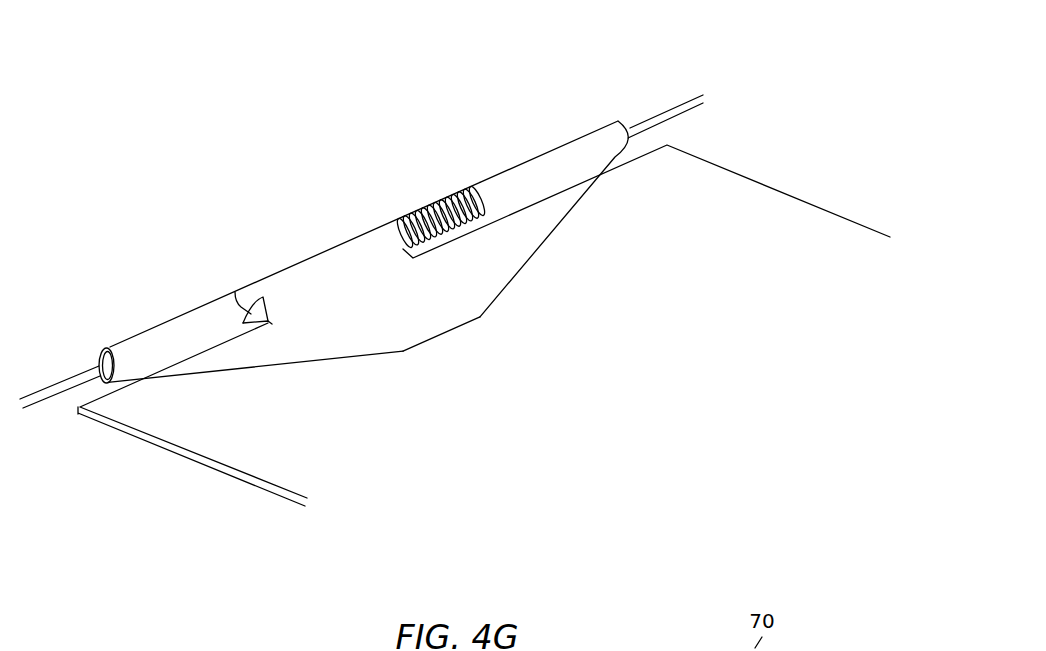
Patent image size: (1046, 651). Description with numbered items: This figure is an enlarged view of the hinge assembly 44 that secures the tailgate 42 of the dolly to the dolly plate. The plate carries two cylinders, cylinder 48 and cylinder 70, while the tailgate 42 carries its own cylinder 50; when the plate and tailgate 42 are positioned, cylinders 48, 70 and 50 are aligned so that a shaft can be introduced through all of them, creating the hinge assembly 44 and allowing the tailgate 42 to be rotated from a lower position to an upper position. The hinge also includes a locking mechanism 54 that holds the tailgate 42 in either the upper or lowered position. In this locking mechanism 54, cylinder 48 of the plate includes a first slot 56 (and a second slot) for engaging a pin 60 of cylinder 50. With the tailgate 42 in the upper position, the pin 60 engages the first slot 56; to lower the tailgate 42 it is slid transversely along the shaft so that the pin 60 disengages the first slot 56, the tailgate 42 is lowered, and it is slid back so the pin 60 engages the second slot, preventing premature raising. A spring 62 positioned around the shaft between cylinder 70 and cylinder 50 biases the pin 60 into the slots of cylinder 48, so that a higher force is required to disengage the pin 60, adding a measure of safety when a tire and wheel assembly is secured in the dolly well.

The tailgate 42 is at (484, 325).
The hinge assembly 44 is at (310, 97).
The cylinder 48 is at (176, 336).
The cylinder 50 is at (342, 265).
The locking mechanism 54 is at (293, 338).
The first slot 56 is at (250, 312).
The pin 60 is at (247, 292).
The spring 62 is at (430, 217).
The cylinder 70 is at (540, 165).